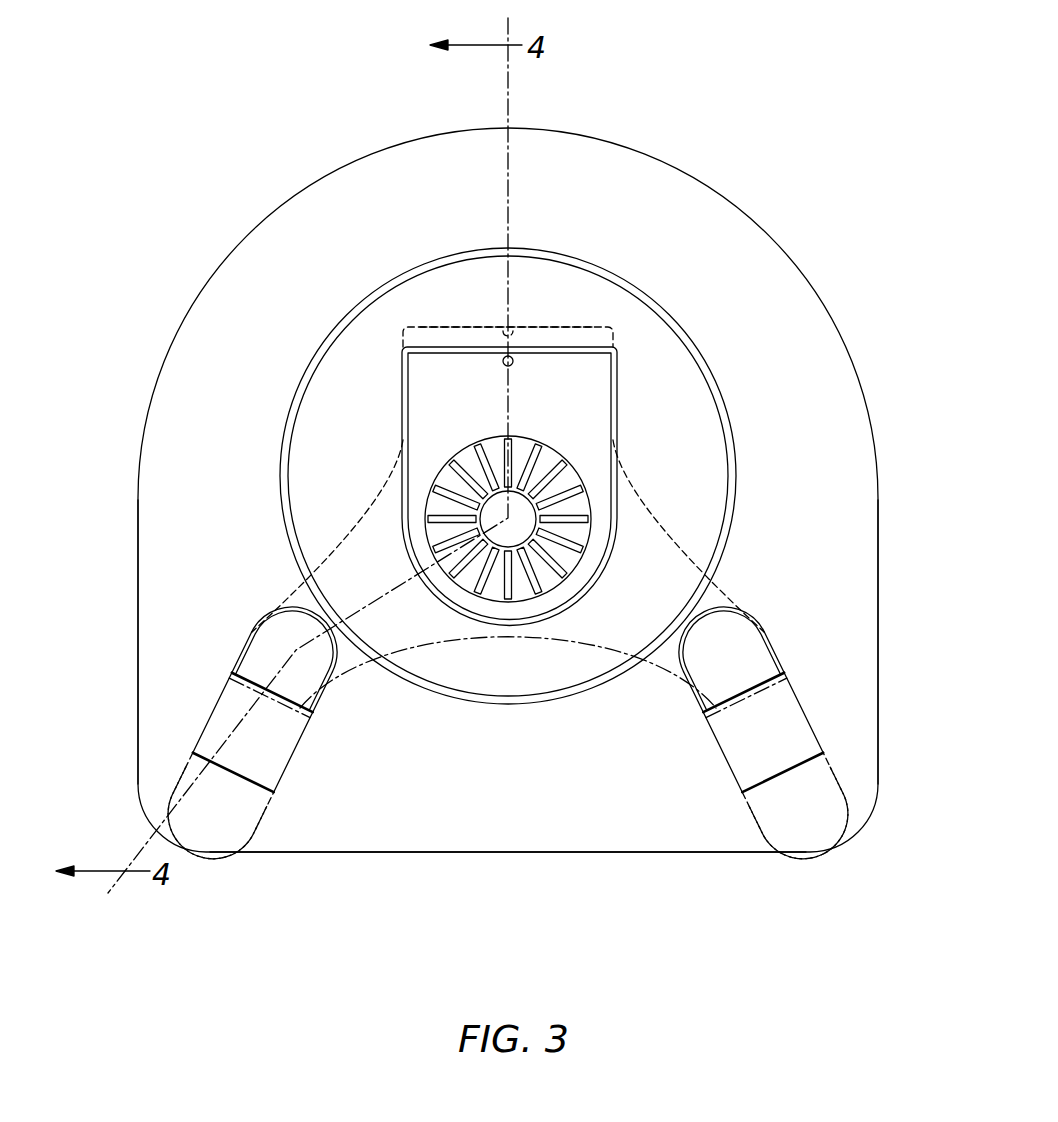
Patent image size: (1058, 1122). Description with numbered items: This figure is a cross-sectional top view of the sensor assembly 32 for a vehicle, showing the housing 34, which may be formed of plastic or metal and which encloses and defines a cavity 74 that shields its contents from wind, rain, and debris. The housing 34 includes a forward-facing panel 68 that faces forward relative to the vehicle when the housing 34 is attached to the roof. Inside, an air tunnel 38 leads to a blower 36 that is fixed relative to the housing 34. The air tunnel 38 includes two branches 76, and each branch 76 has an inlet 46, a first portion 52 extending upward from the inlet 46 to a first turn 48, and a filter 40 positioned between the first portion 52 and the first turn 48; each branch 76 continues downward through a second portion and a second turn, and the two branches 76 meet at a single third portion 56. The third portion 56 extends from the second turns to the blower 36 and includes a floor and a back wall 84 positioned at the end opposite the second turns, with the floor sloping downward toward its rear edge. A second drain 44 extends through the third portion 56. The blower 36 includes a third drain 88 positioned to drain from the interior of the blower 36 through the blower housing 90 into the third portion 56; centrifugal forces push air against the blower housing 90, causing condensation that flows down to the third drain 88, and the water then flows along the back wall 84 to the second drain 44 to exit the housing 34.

The sensor assembly 32 is at (729, 134).
The housing 34 is at (805, 300).
The blower 36 is at (490, 440).
The air tunnel 38 is at (655, 514).
The filter 40 is at (284, 765).
The second drain 44 is at (514, 328).
The inlet 46 is at (137, 820).
The first turn 48 is at (266, 632).
The first portion 52 is at (252, 821).
The third portion 56 is at (402, 342).
The forward-facing panel 68 is at (578, 853).
The cavity 74 is at (512, 682).
The branches 76 is at (340, 680).
The back wall 84 is at (477, 327).
The third drain 88 is at (512, 365).
The blower housing 90 is at (405, 508).